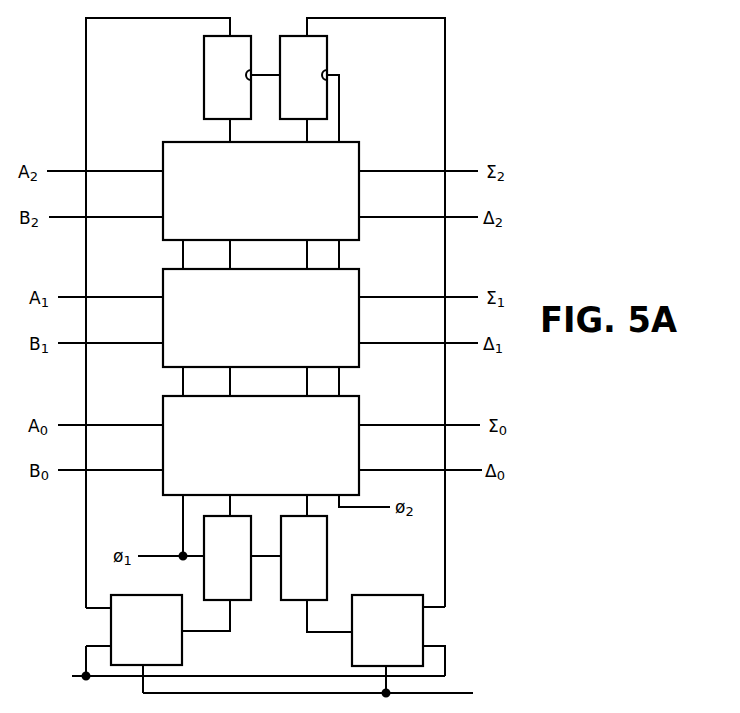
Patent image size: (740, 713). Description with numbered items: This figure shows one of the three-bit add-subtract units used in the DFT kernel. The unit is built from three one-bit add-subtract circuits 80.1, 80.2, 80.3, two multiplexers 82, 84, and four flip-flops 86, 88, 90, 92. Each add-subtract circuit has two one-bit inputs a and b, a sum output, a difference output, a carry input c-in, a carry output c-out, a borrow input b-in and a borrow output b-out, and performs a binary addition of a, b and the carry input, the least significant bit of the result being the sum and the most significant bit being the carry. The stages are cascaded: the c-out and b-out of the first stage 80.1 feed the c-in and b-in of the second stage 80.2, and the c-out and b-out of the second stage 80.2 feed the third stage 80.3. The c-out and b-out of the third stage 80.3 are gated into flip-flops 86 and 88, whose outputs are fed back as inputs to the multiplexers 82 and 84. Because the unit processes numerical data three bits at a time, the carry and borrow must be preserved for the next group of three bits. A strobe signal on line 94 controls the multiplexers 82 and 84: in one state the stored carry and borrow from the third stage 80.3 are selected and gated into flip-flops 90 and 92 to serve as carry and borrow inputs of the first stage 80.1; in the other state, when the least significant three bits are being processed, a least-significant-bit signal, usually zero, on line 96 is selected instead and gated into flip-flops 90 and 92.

The one-bit add-subtract circuit 80.1 is at (363, 414).
The one-bit add-subtract circuit 80.2 is at (363, 288).
The one-bit add-subtract circuit 80.3 is at (361, 158).
The multiplexer 82 is at (133, 595).
The multiplexer 84 is at (377, 595).
The flip-flop 86 is at (204, 77).
The flip-flop 88 is at (327, 63).
The flip-flop 90 is at (243, 603).
The flip-flop 92 is at (328, 549).
The strobe signal line 94 is at (463, 692).
The lsb signal line 96 is at (78, 672).